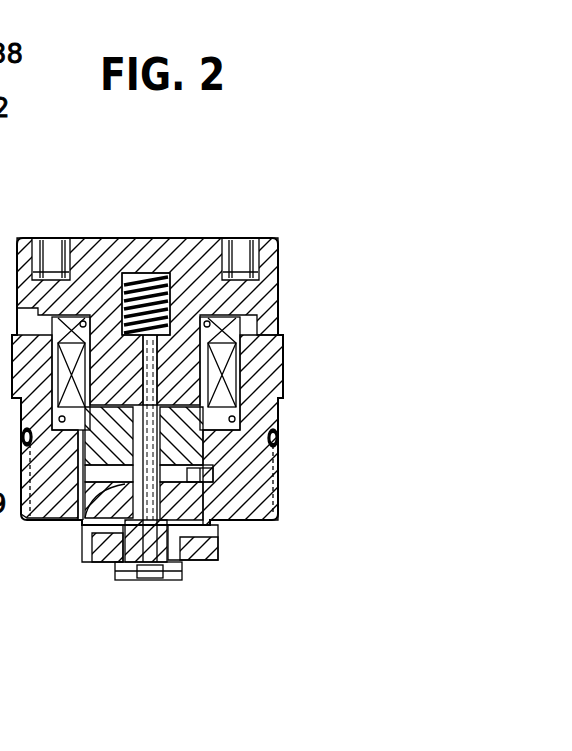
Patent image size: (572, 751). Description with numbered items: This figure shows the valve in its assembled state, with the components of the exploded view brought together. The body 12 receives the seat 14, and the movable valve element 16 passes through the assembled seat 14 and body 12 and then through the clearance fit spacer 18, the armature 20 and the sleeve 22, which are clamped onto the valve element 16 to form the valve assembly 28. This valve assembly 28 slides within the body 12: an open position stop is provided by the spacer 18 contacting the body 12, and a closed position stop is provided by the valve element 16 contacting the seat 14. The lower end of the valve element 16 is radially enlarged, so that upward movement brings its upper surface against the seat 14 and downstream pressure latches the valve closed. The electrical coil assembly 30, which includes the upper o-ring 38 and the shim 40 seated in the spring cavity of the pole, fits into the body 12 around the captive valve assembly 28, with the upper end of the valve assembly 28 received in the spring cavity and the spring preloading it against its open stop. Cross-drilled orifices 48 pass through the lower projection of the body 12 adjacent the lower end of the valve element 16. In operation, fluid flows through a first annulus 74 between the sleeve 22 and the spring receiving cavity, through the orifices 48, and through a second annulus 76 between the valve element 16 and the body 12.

The electrical coil assembly 30 is at (30, 159).
The body 12 is at (248, 498).
The armature 20 is at (305, 430).
The upper o-ring 38 is at (85, 245).
The shim 40 is at (232, 243).
The second annulus 76 is at (110, 335).
The sleeve 22 is at (165, 389).
The first annulus 74 is at (82, 550).
The clearance fit spacer 18 is at (213, 473).
The cross-drilled orifices 48 is at (208, 525).
The seat 14 is at (197, 557).
The movable valve element 16 is at (182, 575).
The valve assembly 28 is at (107, 590).